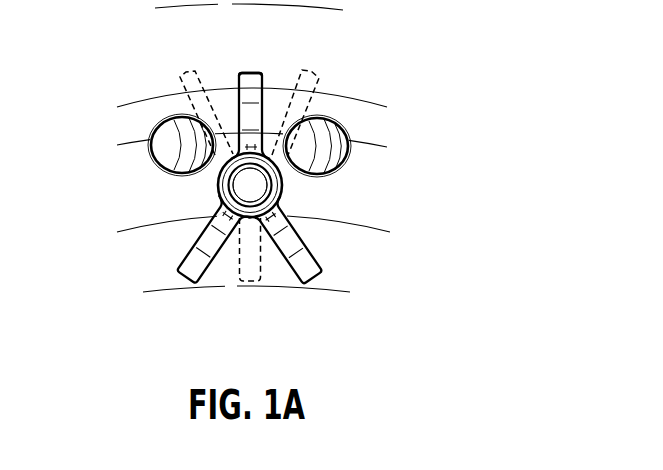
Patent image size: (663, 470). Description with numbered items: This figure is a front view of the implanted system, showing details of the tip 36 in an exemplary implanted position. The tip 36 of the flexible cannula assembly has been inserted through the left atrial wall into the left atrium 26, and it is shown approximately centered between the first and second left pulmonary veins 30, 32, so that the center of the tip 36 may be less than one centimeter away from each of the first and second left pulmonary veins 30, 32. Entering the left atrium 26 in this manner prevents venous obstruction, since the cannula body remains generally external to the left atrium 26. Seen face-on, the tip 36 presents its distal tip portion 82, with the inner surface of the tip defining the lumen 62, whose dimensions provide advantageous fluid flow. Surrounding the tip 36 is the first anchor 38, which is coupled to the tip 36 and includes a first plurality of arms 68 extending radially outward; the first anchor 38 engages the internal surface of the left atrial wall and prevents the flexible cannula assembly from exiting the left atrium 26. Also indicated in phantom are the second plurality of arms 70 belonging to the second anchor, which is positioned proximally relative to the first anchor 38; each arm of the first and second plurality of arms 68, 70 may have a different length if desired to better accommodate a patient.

The left atrium 26 is at (107, 202).
The first left pulmonary vein 30 is at (170, 116).
The second left pulmonary vein 32 is at (330, 117).
The tip 36 is at (288, 190).
The first anchor 38 is at (259, 66).
The lumen 62 is at (217, 217).
The first plurality of arms 68 is at (240, 75).
The second plurality of arms 70 is at (250, 283).
The distal tip portion 82 is at (242, 189).